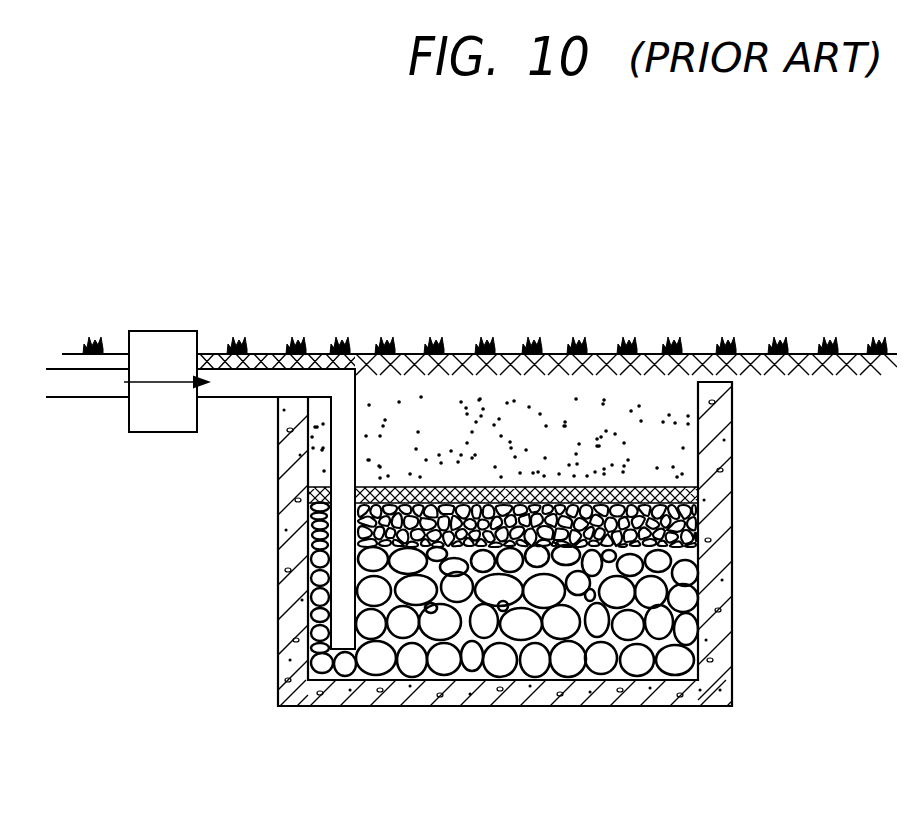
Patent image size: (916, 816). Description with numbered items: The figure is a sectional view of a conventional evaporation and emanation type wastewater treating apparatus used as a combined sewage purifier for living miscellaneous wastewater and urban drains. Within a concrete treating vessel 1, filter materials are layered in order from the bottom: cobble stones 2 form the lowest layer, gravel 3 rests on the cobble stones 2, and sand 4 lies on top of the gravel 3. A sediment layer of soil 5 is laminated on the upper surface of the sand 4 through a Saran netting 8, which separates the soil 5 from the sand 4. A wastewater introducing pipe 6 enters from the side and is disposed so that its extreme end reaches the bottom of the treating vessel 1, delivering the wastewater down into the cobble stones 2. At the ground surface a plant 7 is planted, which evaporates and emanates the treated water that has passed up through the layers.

The treating vessel 1 is at (722, 582).
The cobble stones 2 is at (630, 662).
The gravel 3 is at (698, 523).
The sand 4 is at (660, 438).
The soil 5 is at (540, 422).
The wastewater introducing pipe 6 is at (237, 398).
The plant 7 is at (718, 345).
The Saran netting 8 is at (660, 483).